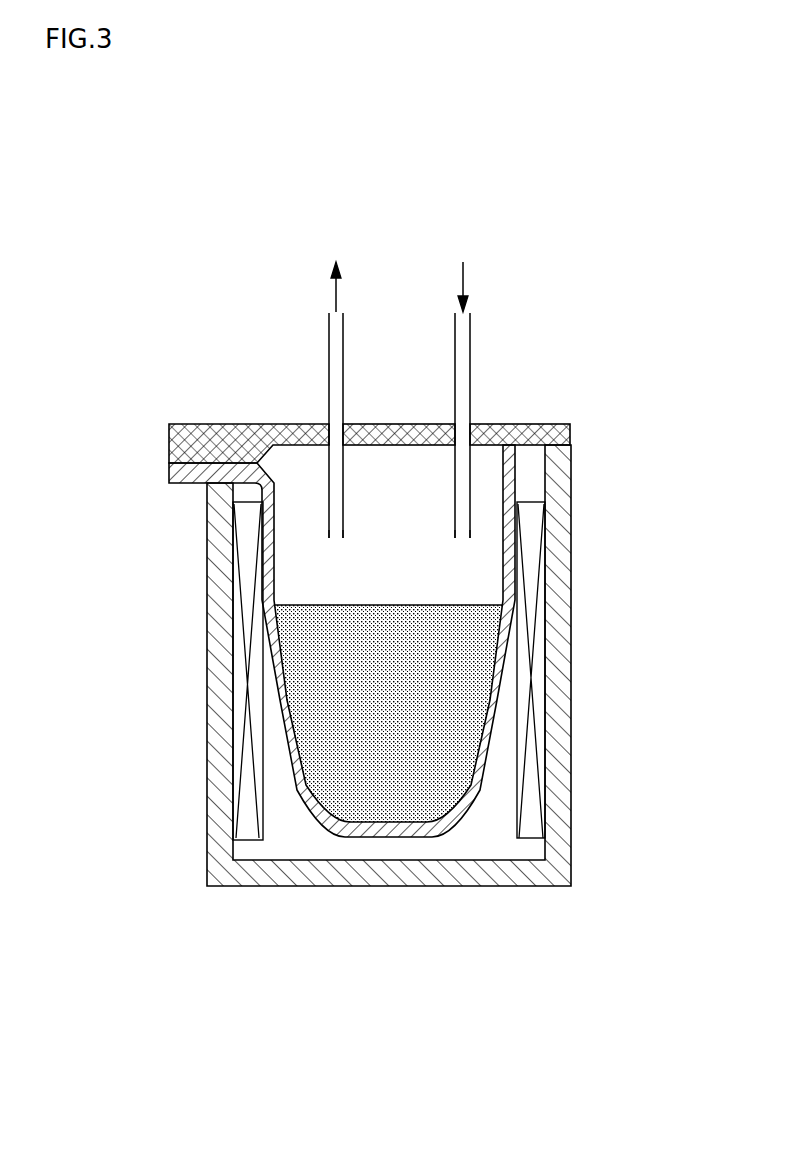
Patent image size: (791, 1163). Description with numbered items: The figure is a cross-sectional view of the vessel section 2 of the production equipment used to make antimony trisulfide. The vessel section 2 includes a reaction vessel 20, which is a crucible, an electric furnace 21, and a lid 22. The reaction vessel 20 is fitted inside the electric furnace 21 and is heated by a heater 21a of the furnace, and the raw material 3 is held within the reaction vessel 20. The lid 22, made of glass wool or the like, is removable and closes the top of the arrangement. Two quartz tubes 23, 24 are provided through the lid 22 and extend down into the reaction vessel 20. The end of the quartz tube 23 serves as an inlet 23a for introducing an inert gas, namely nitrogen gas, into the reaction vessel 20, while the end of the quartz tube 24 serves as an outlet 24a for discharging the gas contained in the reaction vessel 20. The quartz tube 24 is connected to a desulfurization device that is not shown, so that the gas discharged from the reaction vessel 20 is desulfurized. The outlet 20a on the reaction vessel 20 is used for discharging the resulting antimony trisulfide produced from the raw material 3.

The vessel section 2 is at (405, 165).
The raw material 3 is at (307, 707).
The reaction vessel 20 is at (282, 700).
The outlet 20a is at (183, 452).
The electric furnace 21 is at (571, 678).
The heater 21a is at (532, 797).
The lid 22 is at (540, 423).
The quartz tube 23 is at (470, 337).
The inlet 23a is at (463, 540).
The quartz tube 24 is at (327, 337).
The outlet 24a is at (337, 540).